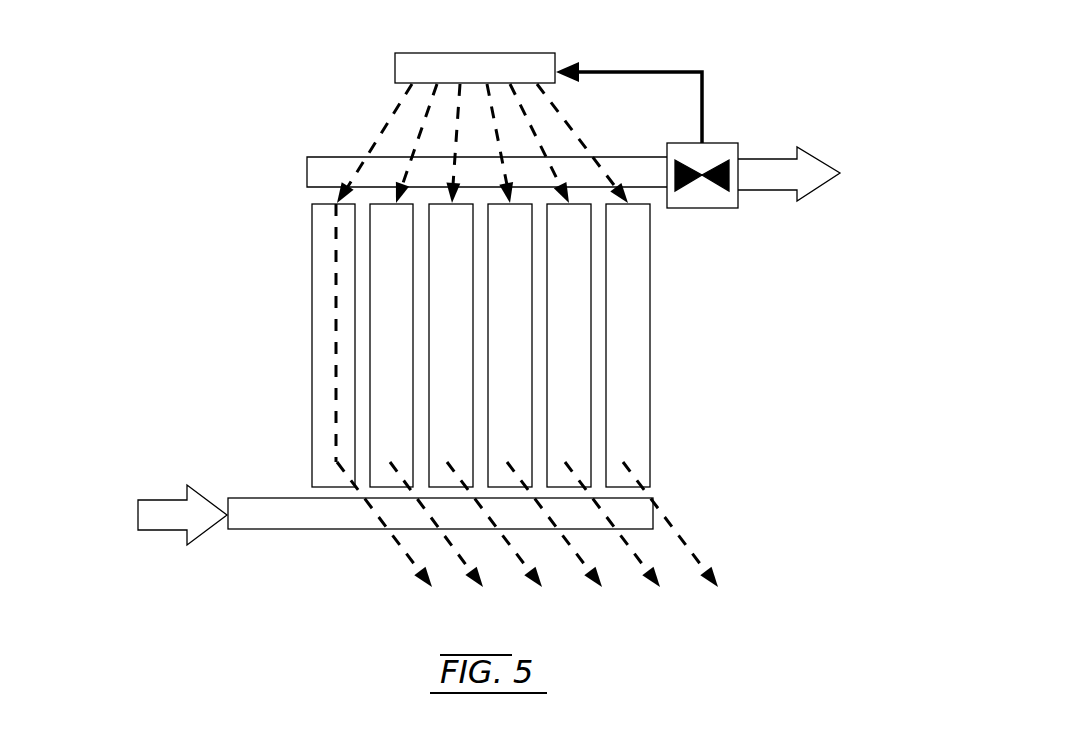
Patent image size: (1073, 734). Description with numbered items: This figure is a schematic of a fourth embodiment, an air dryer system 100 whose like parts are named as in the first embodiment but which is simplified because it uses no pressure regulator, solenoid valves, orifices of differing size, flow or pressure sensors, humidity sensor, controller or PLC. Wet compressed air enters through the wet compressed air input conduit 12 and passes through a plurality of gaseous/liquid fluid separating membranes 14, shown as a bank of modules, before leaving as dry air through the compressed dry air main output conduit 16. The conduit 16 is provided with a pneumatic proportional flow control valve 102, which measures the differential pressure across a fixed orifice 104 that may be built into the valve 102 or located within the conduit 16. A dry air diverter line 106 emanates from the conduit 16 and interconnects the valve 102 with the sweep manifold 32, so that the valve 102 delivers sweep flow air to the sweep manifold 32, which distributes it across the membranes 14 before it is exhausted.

The air dryer system 100 is at (224, 78).
The sweep manifold 32 is at (395, 63).
The gaseous/liquid fluid separating membranes 14 is at (442, 395).
The compressed dry air main output conduit 16 is at (757, 188).
The pneumatic proportional flow control valve 102 is at (693, 209).
The fixed orifice 104 is at (683, 158).
The dry air diverter line 106 is at (642, 70).
The wet compressed air input conduit 12 is at (275, 530).